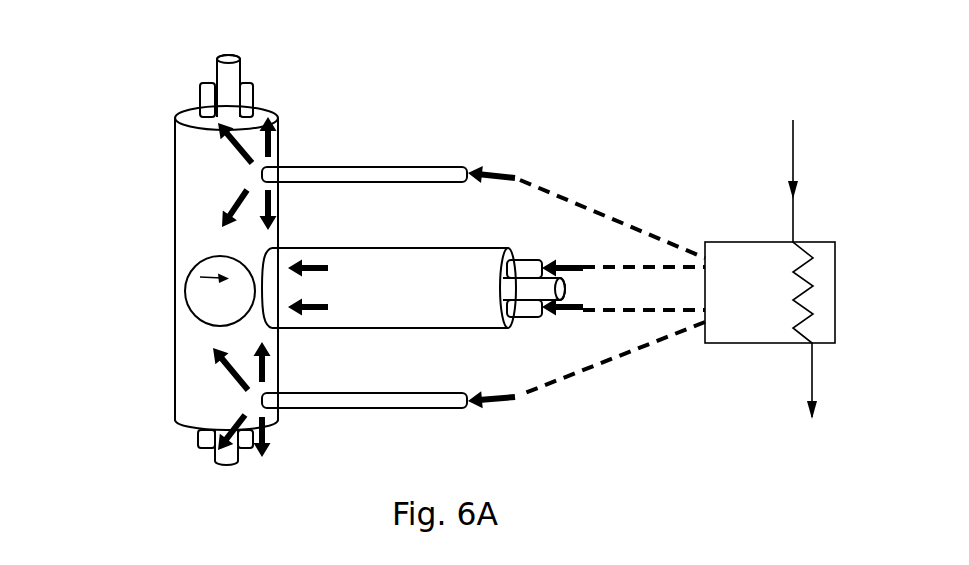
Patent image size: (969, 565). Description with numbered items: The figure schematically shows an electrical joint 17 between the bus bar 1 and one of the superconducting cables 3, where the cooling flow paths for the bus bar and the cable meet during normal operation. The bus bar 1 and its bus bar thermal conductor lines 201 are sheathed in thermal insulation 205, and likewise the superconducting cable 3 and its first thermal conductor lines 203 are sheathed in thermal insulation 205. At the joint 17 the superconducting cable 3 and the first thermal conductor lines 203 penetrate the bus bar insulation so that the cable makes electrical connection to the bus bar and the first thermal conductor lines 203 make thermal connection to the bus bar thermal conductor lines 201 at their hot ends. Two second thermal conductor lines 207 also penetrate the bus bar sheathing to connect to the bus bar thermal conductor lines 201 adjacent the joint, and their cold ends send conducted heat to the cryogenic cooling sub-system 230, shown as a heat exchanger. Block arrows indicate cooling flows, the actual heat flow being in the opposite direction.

The bus bar 1 is at (240, 65).
The bus bar thermal conductor lines 201 is at (205, 83).
The thermal insulation 205 is at (188, 108).
The second thermal conductor lines 207 is at (413, 165).
The first thermal conductor lines 203 is at (547, 265).
The electrical joint 17 is at (190, 278).
The superconducting cable 3 is at (572, 287).
The cryogenic cooling sub-system 230 is at (677, 269).